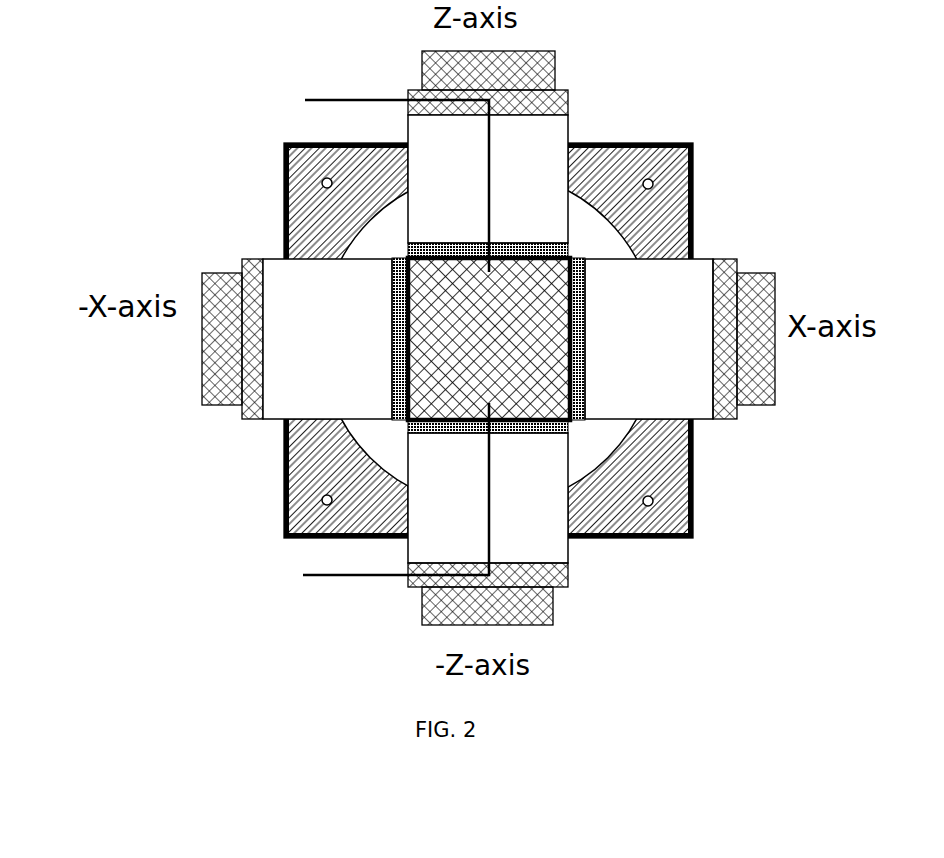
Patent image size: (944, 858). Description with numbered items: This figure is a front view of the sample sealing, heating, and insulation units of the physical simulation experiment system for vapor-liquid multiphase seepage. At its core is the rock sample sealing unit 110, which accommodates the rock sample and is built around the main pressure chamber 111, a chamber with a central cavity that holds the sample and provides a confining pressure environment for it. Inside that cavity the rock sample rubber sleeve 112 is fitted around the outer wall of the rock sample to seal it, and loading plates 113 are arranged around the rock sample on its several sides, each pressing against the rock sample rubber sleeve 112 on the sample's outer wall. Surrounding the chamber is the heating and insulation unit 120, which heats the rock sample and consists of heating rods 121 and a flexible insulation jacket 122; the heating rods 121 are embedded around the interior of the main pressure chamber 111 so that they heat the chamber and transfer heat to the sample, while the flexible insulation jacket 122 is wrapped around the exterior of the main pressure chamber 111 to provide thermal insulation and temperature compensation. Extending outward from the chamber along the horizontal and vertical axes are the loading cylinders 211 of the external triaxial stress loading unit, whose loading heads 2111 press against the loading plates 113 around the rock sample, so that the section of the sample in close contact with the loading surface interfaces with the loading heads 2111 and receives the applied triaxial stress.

The rock sample sealing unit 110 is at (312, 479).
The main pressure chamber 111 is at (693, 187).
The rock sample rubber sleeve 112 is at (572, 420).
The loading plates 113 is at (580, 278).
The heating and insulation unit 120 is at (136, 121).
The heating rods 121 is at (322, 184).
The flexible insulation jacket 122 is at (286, 144).
The loading cylinders 211 is at (202, 345).
The loading heads 2111 is at (310, 397).